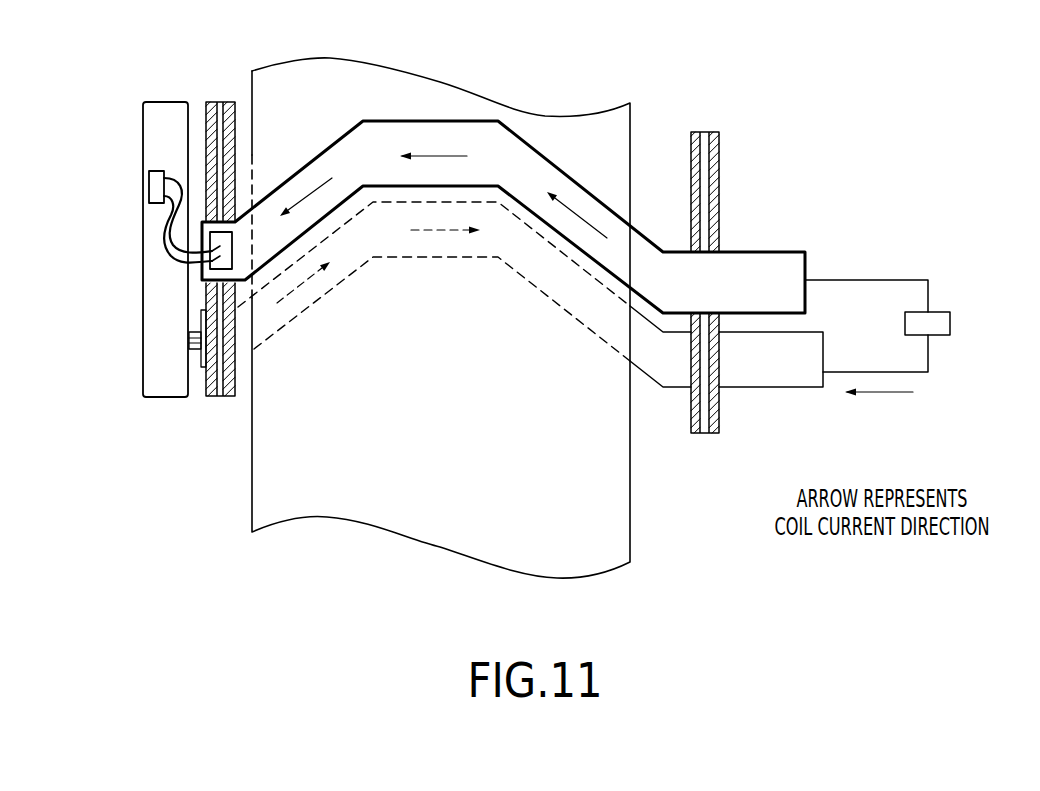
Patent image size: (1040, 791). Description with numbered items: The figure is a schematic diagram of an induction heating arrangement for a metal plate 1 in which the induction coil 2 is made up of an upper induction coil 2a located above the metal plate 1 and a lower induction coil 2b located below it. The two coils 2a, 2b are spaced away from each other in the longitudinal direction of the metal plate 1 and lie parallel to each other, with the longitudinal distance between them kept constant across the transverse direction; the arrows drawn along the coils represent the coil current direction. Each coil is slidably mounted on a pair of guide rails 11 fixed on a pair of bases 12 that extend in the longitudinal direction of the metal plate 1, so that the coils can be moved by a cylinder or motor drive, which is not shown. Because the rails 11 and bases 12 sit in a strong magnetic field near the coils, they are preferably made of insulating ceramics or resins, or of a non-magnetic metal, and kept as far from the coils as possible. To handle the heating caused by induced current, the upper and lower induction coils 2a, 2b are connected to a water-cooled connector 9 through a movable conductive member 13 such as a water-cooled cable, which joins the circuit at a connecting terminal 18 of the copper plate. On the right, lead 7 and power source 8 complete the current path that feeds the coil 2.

The metal plate 1 is at (383, 78).
The induction coil 2 is at (512, 269).
The upper induction coil 2a is at (320, 165).
The lower induction coil 2b is at (353, 260).
The lead wire 7 is at (887, 280).
The power source 8 is at (952, 322).
The water-cooled connector 9 is at (150, 318).
The guide rail 11 is at (218, 397).
The base 12 is at (204, 398).
The movable conductive member 13 is at (212, 262).
The connecting terminal 18 is at (149, 185).